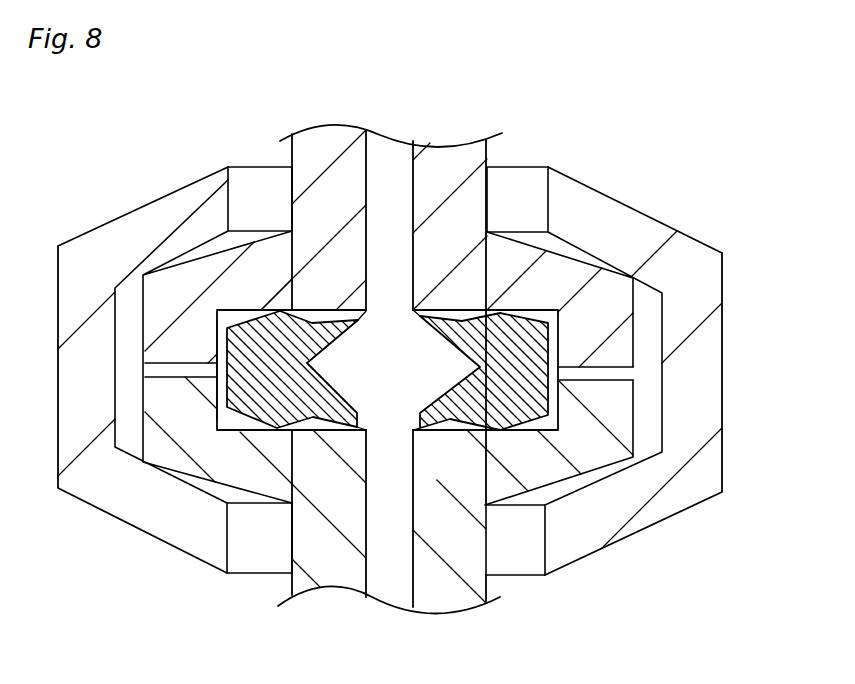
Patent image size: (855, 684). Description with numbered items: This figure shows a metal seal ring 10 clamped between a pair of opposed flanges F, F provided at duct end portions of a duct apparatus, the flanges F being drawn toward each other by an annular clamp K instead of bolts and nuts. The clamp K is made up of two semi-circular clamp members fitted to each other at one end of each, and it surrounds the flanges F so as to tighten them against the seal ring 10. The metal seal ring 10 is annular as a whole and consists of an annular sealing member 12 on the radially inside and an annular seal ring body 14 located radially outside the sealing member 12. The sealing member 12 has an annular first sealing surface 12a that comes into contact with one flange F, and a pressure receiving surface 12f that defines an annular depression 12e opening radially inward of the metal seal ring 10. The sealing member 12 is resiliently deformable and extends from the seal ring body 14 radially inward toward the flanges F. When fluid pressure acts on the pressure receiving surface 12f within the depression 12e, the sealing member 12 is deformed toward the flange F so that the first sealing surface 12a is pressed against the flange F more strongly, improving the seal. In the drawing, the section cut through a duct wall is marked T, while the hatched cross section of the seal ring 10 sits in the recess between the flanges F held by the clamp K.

The metal seal ring 10 is at (270, 434).
The sealing member 12 is at (310, 427).
The first sealing surface 12a is at (349, 348).
The annular depression 12e is at (348, 383).
The pressure receiving surface 12f is at (345, 352).
The seal ring body 14 is at (222, 413).
The plate member T is at (460, 160).
The annular clamp K is at (673, 223).
The flange F is at (611, 288).